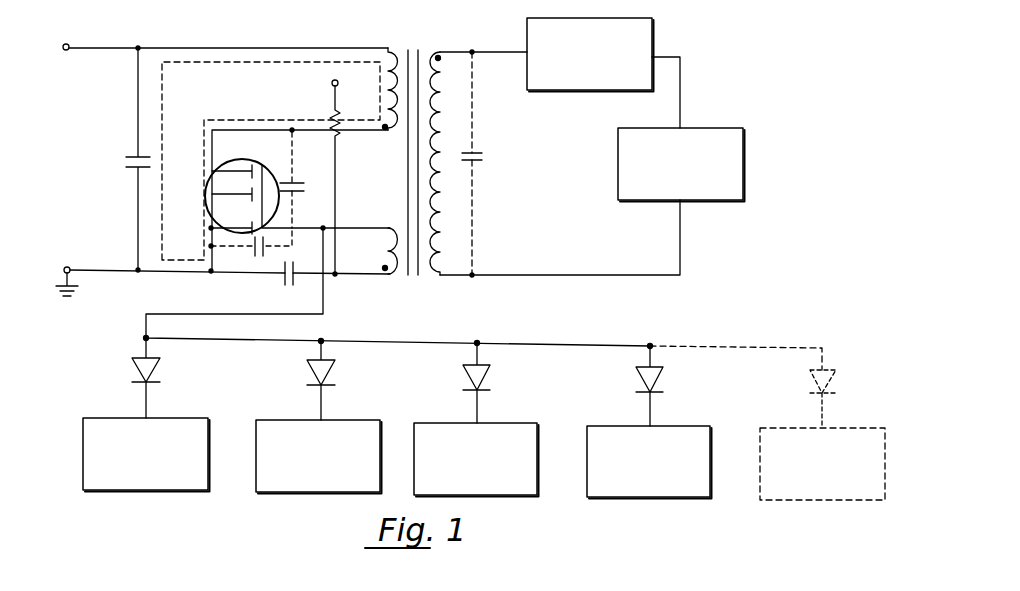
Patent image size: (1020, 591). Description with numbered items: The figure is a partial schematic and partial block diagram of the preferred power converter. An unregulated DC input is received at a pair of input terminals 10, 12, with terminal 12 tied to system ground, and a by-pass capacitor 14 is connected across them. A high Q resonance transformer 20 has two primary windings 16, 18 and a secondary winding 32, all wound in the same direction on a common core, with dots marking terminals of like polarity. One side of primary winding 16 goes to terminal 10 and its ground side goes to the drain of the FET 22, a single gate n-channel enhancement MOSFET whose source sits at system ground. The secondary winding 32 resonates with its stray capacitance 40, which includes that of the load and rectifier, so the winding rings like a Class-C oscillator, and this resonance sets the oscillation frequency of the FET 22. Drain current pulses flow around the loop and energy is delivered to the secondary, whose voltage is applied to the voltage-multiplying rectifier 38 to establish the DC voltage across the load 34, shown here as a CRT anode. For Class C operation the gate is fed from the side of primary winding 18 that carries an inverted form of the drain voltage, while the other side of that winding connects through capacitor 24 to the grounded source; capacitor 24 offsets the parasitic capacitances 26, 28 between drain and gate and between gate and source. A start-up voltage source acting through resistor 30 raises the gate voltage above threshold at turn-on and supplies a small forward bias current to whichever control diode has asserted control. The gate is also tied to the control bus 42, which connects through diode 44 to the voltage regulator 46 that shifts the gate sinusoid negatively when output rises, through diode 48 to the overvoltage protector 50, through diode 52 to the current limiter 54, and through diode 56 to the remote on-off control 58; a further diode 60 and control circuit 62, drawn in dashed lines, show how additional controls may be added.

The input terminal 10 is at (65, 44).
The input terminal 12 is at (67, 266).
The by-pass capacitor 14 is at (120, 156).
The primary winding 16 is at (383, 108).
The primary winding 18 is at (384, 268).
The transformer 20 is at (412, 278).
The FET 22 is at (244, 161).
The capacitor 24 is at (284, 286).
The parasitic capacitance 26 is at (296, 182).
The parasitic capacitance 28 is at (252, 256).
The resistor 30 is at (333, 118).
The secondary winding 32 is at (440, 232).
The load 34 is at (718, 128).
The voltage-multiplying rectifier 38 is at (628, 18).
The stray capacitance 40 is at (222, 64).
The control bus 42 is at (388, 338).
The diode 44 is at (160, 366).
The voltage regulator 46 is at (180, 418).
The diode 48 is at (335, 368).
The overvoltage protector 50 is at (356, 420).
The diode 52 is at (501, 367).
The current limiter 54 is at (517, 423).
The diode 56 is at (663, 374).
The remote on-off control 58 is at (688, 426).
The diode 60 is at (838, 380).
The control circuit 62 is at (857, 428).